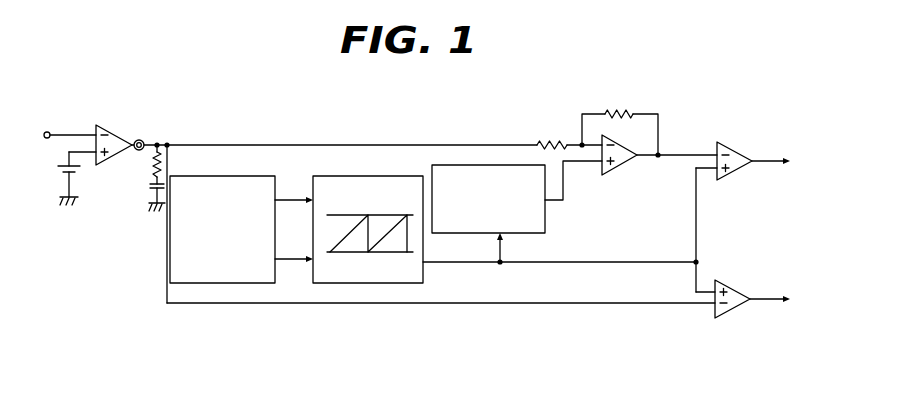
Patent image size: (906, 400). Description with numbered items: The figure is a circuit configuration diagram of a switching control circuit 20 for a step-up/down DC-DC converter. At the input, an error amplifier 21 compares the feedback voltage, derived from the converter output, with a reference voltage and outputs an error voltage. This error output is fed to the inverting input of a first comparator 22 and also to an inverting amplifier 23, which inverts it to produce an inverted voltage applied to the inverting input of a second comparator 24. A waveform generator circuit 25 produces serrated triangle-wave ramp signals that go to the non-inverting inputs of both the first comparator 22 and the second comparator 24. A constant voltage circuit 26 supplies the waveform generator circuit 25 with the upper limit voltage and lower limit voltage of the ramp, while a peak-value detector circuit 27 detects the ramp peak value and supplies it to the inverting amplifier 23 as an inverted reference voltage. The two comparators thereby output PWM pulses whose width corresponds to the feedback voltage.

The switching control circuit 20 is at (371, 108).
The error amplifier 21 is at (122, 128).
The first comparator 22 is at (737, 311).
The inverting amplifier 23 is at (560, 120).
The second comparator 24 is at (742, 147).
The waveform generator circuit 25 is at (362, 283).
The constant voltage circuit 26 is at (222, 283).
The peak-value detector circuit 27 is at (545, 222).